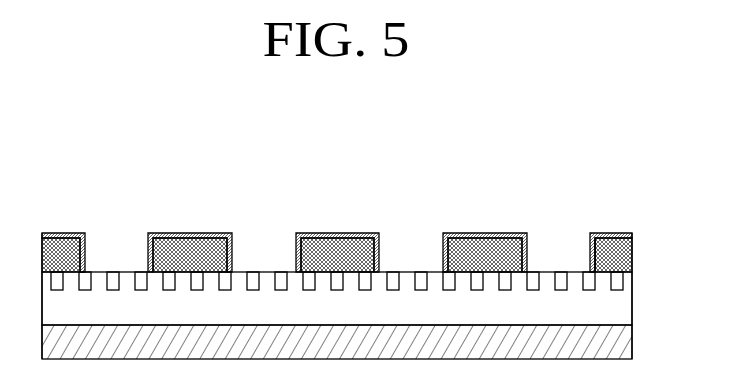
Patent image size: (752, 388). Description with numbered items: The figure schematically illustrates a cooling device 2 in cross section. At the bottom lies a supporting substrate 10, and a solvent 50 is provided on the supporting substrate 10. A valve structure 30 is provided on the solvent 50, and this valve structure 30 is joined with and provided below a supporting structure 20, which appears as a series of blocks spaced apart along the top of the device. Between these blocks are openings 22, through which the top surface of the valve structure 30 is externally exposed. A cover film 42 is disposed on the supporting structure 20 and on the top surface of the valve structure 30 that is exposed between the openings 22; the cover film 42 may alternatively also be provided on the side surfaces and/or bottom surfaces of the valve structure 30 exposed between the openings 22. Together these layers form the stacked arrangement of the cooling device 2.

The cooling device 2 is at (661, 129).
The supporting substrate 10 is at (615, 342).
The solvent 50 is at (618, 312).
The valve structure 30 is at (625, 277).
The supporting structure 20 is at (632, 249).
The openings 22 is at (591, 263).
The cover film 42 is at (617, 234).